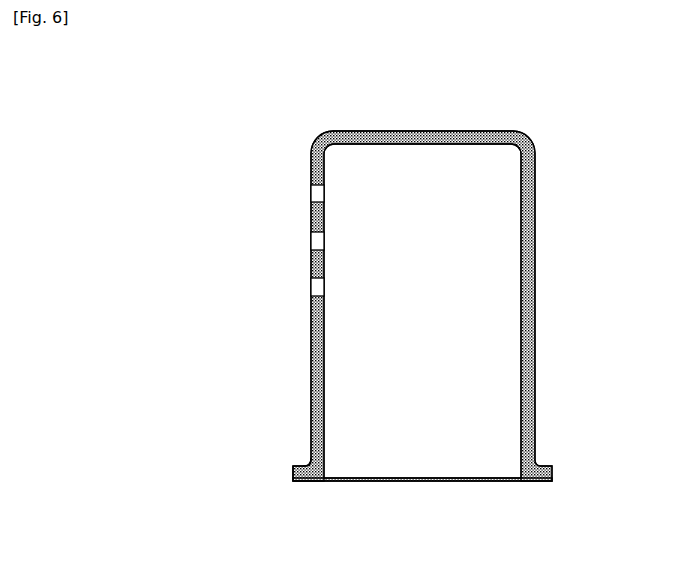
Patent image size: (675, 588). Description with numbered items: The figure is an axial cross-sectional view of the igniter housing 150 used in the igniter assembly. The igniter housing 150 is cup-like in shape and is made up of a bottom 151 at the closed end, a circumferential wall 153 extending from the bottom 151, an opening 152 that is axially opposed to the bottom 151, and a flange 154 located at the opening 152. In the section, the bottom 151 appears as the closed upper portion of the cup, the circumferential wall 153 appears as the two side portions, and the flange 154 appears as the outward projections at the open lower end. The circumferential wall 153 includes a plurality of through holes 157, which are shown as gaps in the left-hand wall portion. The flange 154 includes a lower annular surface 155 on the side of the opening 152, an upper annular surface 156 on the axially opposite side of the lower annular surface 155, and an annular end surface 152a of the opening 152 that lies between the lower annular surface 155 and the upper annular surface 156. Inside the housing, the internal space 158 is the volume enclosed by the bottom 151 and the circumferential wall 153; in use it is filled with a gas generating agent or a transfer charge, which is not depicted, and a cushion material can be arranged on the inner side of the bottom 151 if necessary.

The igniter housing 150 is at (386, 124).
The bottom 151 is at (470, 130).
The opening 152 is at (430, 482).
The annular end surface 152a is at (293, 471).
The circumferential wall 153 is at (536, 296).
The flange 154 is at (540, 486).
The lower annular surface 155 is at (299, 483).
The upper annular surface 156 is at (303, 465).
The through holes 157 is at (316, 289).
The internal space 158 is at (443, 316).